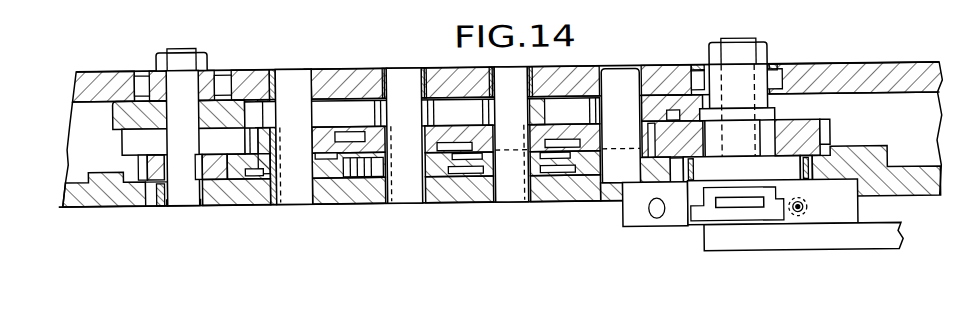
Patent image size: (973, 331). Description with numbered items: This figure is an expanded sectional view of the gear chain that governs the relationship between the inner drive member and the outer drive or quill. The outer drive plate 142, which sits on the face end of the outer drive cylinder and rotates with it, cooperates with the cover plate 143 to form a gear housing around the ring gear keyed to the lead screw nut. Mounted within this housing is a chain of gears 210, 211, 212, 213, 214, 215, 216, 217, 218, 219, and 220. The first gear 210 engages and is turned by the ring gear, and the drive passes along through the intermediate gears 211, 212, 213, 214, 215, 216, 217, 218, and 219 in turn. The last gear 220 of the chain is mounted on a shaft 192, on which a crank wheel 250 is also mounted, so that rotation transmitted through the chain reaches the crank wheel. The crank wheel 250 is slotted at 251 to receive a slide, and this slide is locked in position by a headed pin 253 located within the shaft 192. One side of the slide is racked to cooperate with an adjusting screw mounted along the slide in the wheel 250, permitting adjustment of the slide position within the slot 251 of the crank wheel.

The outer drive plate 142 is at (923, 200).
The cover plate 143 is at (900, 47).
The shaft 192 is at (756, 78).
The gear 210 is at (132, 103).
The gear 211 is at (156, 196).
The gear 212 is at (247, 204).
The gear 213 is at (320, 121).
The gear 214 is at (350, 205).
The gear 215 is at (440, 206).
The gear 216 is at (482, 206).
The gear 217 is at (538, 88).
The gear 218 is at (594, 79).
The gear 219 is at (611, 186).
The gear 220 is at (681, 187).
The crank wheel 250 is at (841, 217).
The slot 251 is at (782, 221).
The headed pin 253 is at (729, 211).